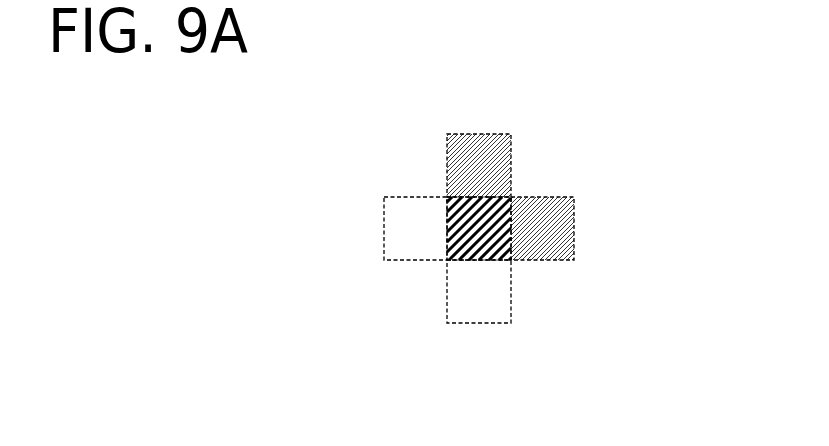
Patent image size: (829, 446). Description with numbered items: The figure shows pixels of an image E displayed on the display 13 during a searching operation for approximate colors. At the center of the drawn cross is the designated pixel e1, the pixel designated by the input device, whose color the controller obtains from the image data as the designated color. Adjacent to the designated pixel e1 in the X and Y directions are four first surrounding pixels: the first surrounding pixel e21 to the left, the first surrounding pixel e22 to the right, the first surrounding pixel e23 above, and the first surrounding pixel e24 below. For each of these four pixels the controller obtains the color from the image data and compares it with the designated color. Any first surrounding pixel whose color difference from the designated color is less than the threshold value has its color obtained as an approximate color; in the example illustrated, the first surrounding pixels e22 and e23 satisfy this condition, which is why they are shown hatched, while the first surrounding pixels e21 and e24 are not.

The display 13 is at (555, 93).
The image E is at (345, 117).
The designated pixel e1 is at (470, 242).
The first surrounding pixel e21 is at (425, 227).
The first surrounding pixel e22 is at (535, 236).
The first surrounding pixel e23 is at (480, 185).
The first surrounding pixel e24 is at (470, 283).